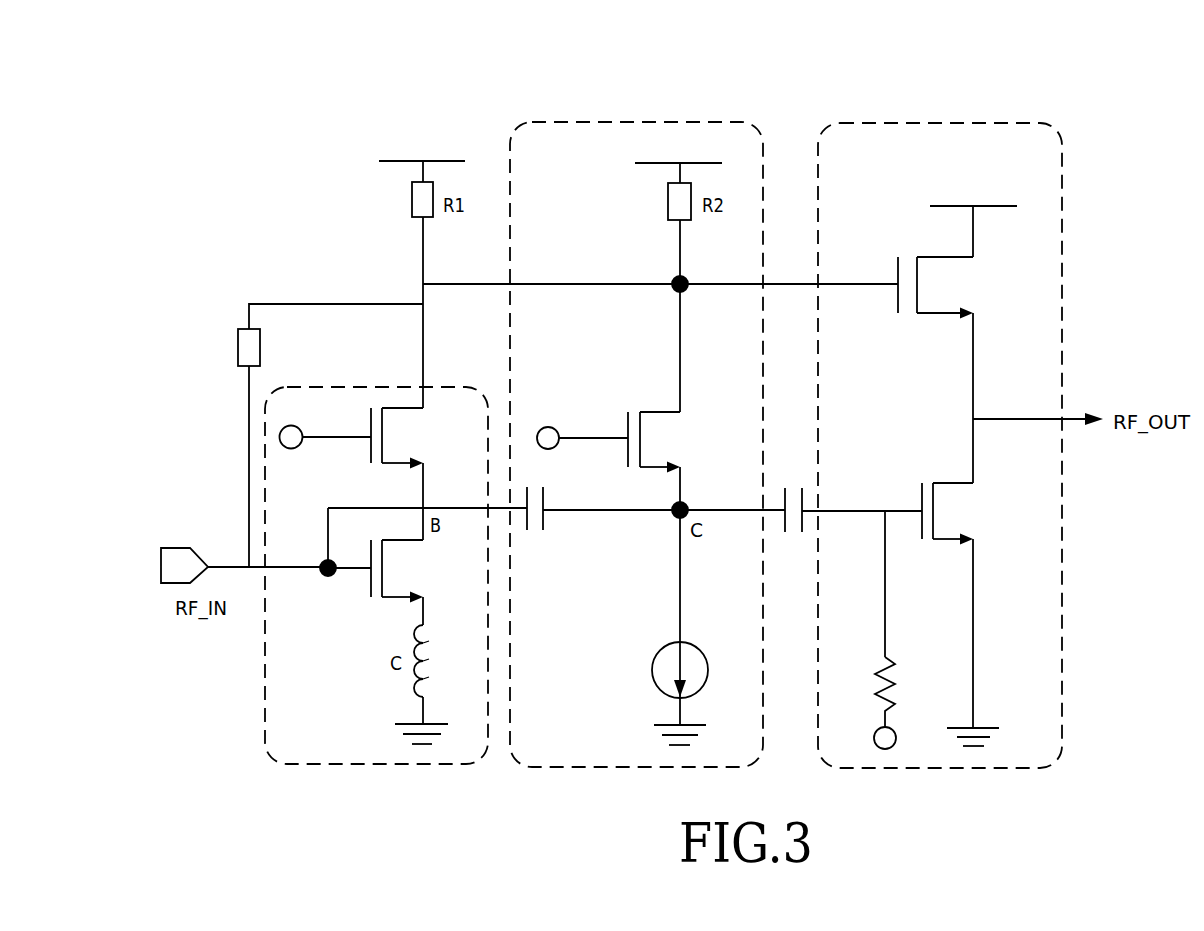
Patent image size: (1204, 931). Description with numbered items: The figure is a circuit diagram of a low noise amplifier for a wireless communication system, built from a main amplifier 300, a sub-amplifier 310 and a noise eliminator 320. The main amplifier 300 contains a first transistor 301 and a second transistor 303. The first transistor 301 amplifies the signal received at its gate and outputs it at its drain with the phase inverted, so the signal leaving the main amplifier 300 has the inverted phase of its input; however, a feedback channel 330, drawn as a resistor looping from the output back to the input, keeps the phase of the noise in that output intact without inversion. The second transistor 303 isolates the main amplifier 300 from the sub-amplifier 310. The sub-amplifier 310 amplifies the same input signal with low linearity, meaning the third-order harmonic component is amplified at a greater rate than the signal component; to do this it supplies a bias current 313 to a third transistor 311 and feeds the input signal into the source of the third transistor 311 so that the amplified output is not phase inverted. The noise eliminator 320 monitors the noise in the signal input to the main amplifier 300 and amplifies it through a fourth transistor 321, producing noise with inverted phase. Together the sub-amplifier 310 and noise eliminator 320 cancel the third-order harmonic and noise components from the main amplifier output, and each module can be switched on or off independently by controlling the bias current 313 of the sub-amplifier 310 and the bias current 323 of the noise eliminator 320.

The main amplifier 300 is at (356, 386).
The first transistor 301 is at (397, 581).
The second transistor 303 is at (380, 438).
The sub-amplifier 310 is at (717, 118).
The third transistor 311 is at (686, 433).
The bias current 313 is at (585, 413).
The noise eliminator 320 is at (1020, 120).
The fourth transistor 321 is at (980, 522).
The bias current 323 is at (905, 657).
The feedback channel 330 is at (266, 301).